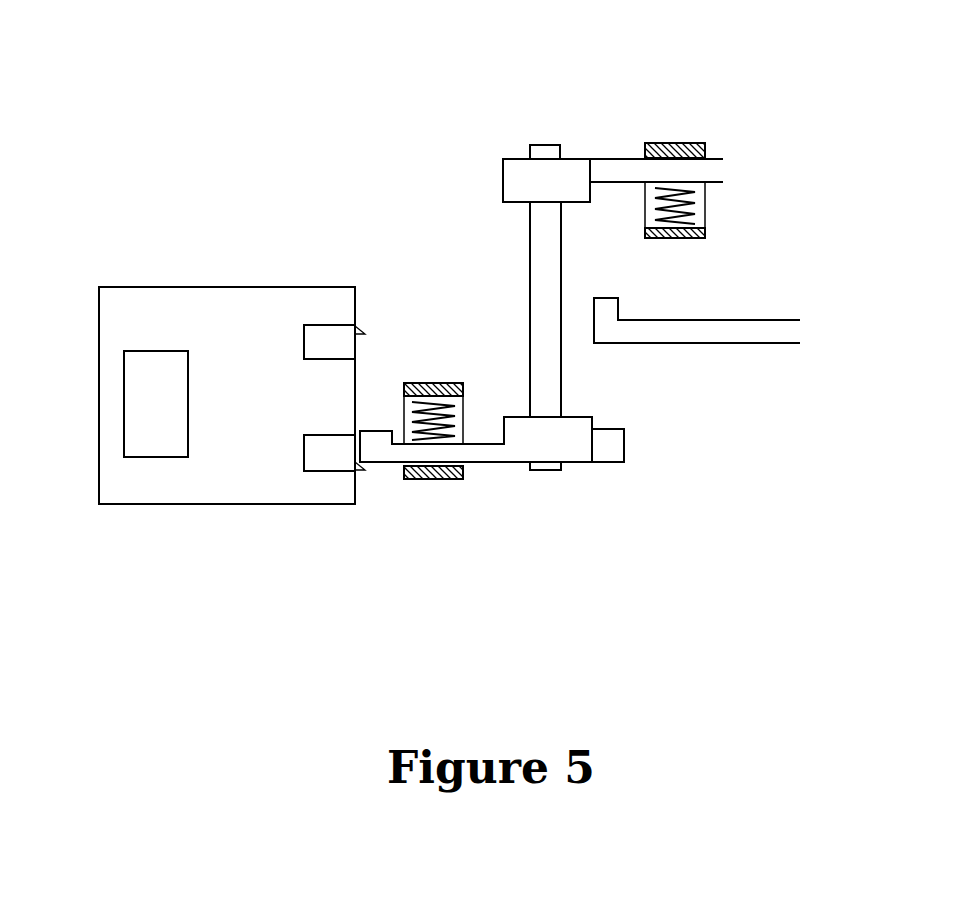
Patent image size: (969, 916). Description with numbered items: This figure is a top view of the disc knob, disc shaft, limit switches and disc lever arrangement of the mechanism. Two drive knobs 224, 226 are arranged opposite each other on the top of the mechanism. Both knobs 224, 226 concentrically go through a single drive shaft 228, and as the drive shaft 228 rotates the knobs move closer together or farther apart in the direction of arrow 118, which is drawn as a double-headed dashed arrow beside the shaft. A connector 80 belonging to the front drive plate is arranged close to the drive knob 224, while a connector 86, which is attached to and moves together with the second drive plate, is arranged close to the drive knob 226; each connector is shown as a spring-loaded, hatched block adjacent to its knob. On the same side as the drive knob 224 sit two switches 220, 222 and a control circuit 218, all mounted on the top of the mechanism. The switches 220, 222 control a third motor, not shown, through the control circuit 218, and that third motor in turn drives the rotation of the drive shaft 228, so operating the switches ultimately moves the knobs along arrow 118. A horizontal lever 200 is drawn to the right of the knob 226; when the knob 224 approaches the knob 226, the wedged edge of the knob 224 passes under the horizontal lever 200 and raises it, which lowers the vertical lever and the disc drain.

The control circuit 218 is at (157, 442).
The switch 220 is at (328, 340).
The switch 222 is at (307, 454).
The connector 80 is at (422, 482).
The drive knob 224 is at (518, 464).
The drive shaft 228 is at (556, 474).
The drive knob 226 is at (556, 192).
The connector 86 is at (710, 220).
The horizontal lever 200 is at (709, 345).
The arrow 118 is at (479, 243).